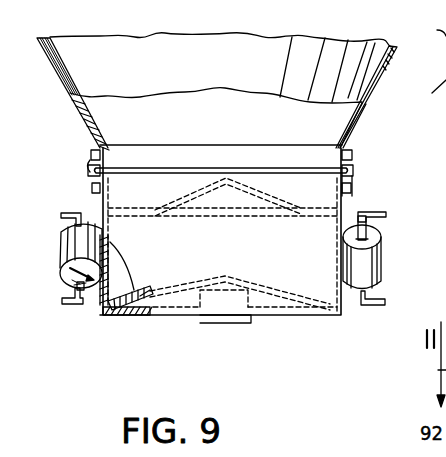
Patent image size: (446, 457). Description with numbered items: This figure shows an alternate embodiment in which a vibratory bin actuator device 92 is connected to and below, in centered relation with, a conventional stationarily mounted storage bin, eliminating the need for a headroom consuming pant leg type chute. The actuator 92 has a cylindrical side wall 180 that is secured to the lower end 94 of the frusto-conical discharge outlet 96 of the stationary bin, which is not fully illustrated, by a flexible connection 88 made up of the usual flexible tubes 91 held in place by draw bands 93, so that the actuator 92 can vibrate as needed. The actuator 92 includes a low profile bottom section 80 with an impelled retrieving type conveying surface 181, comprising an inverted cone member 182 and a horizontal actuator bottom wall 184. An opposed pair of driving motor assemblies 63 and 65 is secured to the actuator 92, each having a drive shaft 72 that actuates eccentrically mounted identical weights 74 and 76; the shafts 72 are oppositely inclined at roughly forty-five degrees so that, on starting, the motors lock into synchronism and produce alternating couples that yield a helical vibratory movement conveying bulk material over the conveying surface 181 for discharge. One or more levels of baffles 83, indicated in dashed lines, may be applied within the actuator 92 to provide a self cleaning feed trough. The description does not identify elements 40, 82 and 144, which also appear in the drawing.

The frame 40 is at (425, 93).
The driving motor assembly 63 is at (58, 249).
The driving motor assembly 65 is at (391, 260).
The drive shaft 72 is at (68, 283).
The eccentrically mounted weight 74 is at (73, 305).
The eccentrically mounted weight 76 is at (62, 214).
The low profile bottom section 80 is at (128, 326).
The drive housing 82 is at (258, 322).
The baffle 83 is at (264, 190).
The flexible connection 88 is at (88, 177).
The flexible tube 91 is at (88, 166).
The bin actuator device 92 is at (352, 199).
The draw band 93 is at (87, 149).
The lower end 94 is at (351, 123).
The discharge outlet 96 is at (284, 39).
The support member 144 is at (425, 28).
The cylindrical side wall 180 is at (101, 284).
The conveying surface 181 is at (120, 300).
The inverted cone member 182 is at (151, 300).
The horizontal actuator bottom wall 184 is at (148, 308).